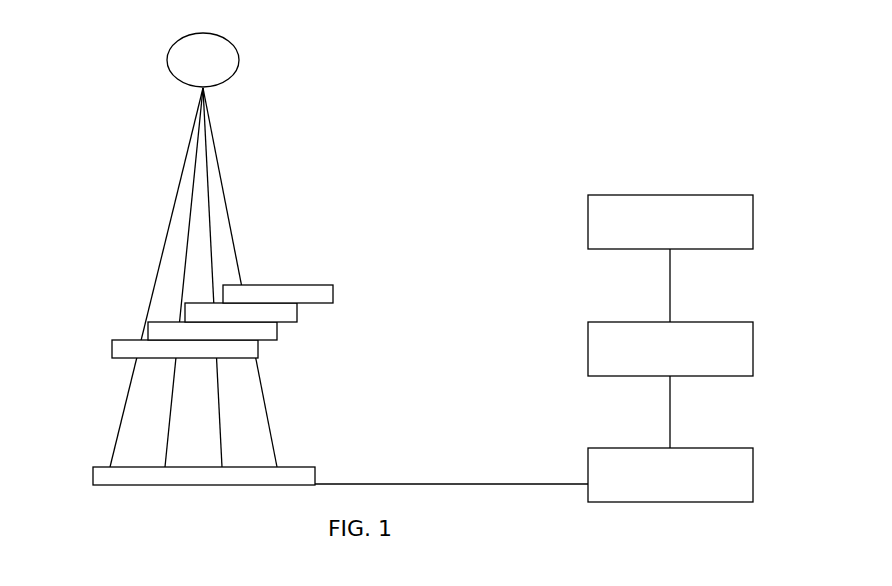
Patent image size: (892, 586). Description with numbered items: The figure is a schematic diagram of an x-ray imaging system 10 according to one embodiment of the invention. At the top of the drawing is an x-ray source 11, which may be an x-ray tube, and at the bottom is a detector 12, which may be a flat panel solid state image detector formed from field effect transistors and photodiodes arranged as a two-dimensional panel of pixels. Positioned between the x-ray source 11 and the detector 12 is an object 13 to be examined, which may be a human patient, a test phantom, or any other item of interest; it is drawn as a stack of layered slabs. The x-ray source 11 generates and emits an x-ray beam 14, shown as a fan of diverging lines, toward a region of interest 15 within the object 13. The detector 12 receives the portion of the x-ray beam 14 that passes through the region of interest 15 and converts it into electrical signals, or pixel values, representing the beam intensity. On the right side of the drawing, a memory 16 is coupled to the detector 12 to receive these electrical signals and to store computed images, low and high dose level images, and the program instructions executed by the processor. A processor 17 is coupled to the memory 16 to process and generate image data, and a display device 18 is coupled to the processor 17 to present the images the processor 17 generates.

The x-ray imaging system 10 is at (439, 136).
The x-ray source 11 is at (223, 68).
The detector 12 is at (297, 465).
The object 13 is at (340, 277).
The x-ray beam 14 is at (223, 177).
The region of interest 15 is at (168, 322).
The memory 16 is at (753, 463).
The processor 17 is at (753, 335).
The display device 18 is at (753, 195).